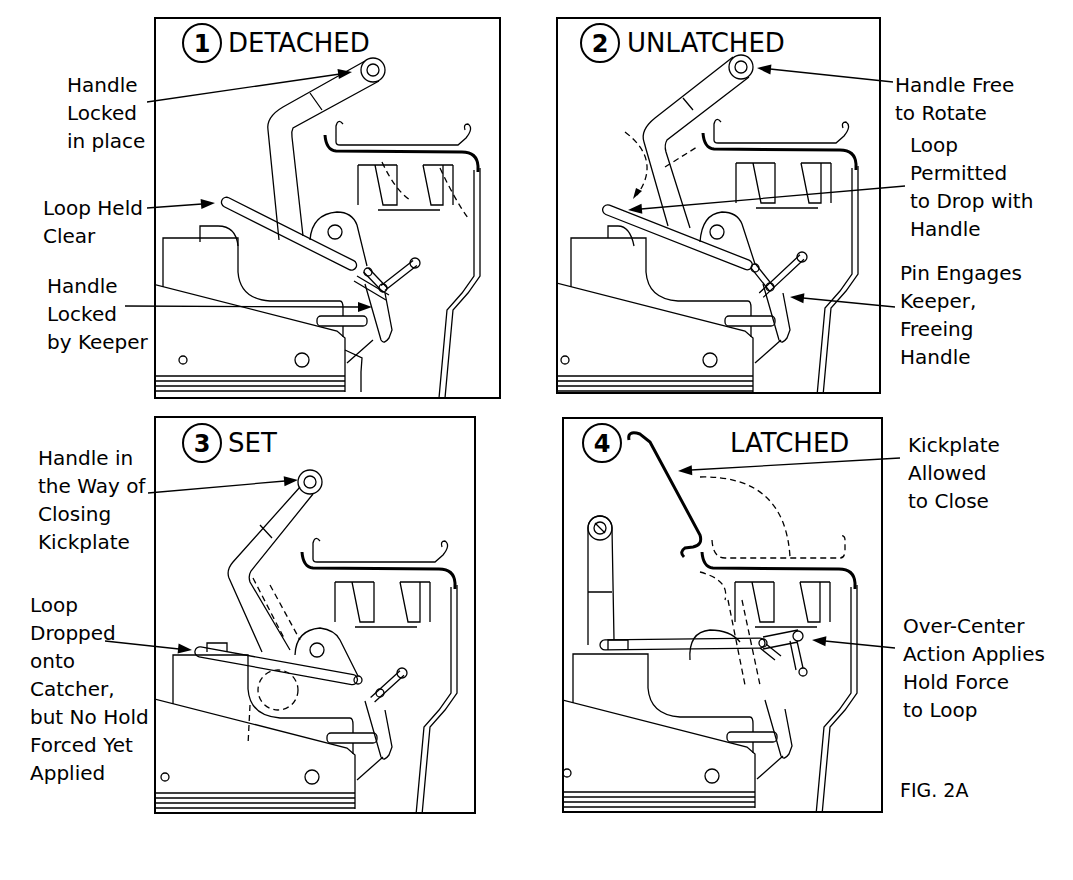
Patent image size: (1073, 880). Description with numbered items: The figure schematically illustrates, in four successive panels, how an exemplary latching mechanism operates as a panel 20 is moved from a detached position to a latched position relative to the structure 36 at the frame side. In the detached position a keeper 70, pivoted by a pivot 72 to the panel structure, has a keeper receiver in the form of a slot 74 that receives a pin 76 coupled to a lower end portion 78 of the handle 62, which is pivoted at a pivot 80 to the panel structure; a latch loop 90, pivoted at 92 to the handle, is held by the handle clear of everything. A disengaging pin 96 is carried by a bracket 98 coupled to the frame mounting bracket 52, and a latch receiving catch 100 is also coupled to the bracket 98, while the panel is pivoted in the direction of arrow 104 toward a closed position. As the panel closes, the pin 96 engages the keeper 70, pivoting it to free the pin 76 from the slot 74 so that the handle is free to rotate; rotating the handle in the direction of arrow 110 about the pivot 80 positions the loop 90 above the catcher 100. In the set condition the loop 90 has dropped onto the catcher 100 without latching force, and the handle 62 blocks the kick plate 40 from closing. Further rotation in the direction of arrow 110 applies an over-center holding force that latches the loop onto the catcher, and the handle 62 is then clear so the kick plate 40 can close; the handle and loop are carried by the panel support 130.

The panel 20 is at (456, 343).
The channel 36 is at (475, 143).
The kick plate 40 is at (380, 143).
The frame mounting bracket 52 is at (222, 347).
The handle 62 is at (386, 71).
The keeper 70 is at (398, 320).
The pivot 72 is at (418, 264).
The slot 74 is at (392, 293).
The pin 76 is at (385, 284).
The lower end portion 78 is at (366, 285).
The pivot 80 is at (337, 225).
The loop 90 is at (235, 195).
The pivot 92 is at (368, 268).
The disengaging pin 96 is at (573, 574).
The bracket 98 is at (221, 284).
The catch 100 is at (622, 636).
The arrow 104 is at (440, 163).
The arrow 110 is at (479, 437).
The support 130 is at (323, 207).